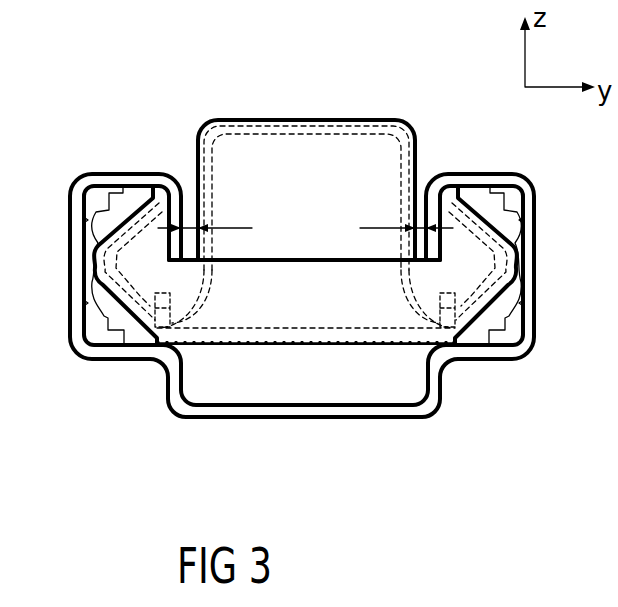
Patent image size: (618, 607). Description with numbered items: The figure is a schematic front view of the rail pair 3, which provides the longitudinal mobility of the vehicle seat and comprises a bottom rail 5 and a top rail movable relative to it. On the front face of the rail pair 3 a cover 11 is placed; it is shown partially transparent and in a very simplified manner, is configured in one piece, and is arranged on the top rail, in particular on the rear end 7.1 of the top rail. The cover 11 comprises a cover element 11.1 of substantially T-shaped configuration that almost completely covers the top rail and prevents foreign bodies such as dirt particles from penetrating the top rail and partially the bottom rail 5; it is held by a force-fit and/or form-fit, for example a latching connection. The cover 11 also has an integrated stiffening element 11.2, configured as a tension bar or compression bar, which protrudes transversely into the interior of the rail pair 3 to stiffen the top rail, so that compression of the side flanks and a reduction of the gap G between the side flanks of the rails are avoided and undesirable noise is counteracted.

The rail pair 3 is at (112, 100).
The bottom rail 5 is at (384, 418).
The rear end of the top rail 7.1 is at (398, 127).
The cover 11 is at (207, 121).
The cover element 11.1 is at (340, 150).
The stiffening element 11.2 is at (425, 345).
The gap G is at (305, 215).